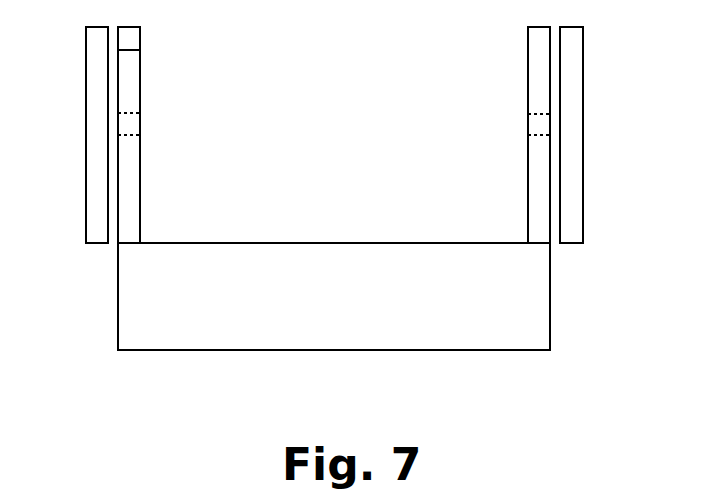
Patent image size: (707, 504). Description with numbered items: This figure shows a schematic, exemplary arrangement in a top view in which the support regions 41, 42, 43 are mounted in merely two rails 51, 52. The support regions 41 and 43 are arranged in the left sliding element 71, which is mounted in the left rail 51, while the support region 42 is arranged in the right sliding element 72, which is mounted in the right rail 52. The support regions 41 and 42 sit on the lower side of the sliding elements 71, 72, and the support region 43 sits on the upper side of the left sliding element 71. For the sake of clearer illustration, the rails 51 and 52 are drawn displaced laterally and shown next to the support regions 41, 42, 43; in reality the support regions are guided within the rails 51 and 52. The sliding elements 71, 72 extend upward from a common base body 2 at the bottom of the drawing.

The base body 2 is at (540, 292).
The left rail 51 is at (93, 113).
The right rail 52 is at (572, 178).
The left sliding element 71 is at (135, 205).
The right sliding element 72 is at (535, 208).
The support region 43 is at (130, 37).
The support region 41 is at (130, 125).
The support region 42 is at (533, 125).